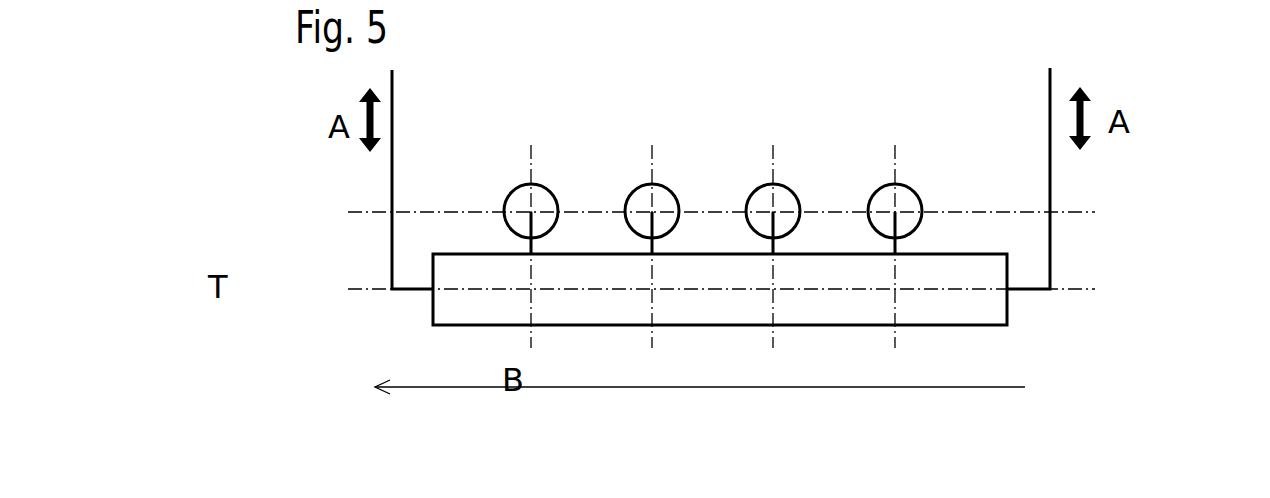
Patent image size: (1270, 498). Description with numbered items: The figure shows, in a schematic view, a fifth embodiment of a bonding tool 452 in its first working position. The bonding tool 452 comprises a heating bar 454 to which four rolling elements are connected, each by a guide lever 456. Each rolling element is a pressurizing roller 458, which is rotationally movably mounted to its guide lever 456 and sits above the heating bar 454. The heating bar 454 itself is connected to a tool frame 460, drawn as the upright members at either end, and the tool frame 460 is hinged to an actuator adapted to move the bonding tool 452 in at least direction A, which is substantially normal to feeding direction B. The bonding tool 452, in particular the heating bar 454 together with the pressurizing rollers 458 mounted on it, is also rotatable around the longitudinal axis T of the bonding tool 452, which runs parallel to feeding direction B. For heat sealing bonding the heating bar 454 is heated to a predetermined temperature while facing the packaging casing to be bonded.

The bonding tool 452 is at (712, 97).
The heating bar 454 is at (988, 303).
The guide lever 456 is at (897, 245).
The pressurizing roller 458 is at (902, 202).
The tool frame 460 is at (1050, 262).